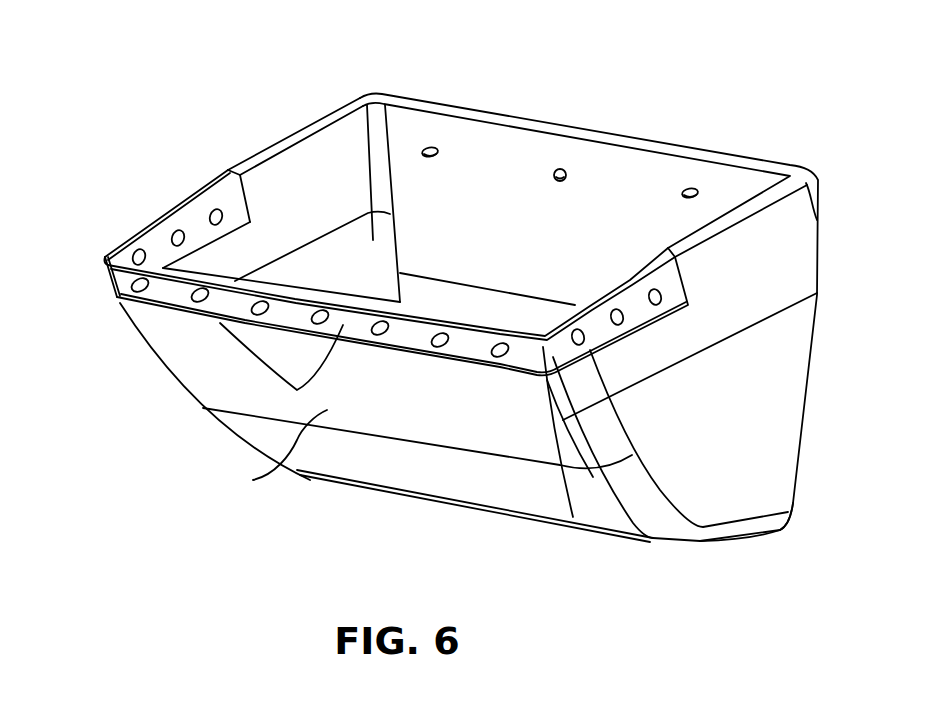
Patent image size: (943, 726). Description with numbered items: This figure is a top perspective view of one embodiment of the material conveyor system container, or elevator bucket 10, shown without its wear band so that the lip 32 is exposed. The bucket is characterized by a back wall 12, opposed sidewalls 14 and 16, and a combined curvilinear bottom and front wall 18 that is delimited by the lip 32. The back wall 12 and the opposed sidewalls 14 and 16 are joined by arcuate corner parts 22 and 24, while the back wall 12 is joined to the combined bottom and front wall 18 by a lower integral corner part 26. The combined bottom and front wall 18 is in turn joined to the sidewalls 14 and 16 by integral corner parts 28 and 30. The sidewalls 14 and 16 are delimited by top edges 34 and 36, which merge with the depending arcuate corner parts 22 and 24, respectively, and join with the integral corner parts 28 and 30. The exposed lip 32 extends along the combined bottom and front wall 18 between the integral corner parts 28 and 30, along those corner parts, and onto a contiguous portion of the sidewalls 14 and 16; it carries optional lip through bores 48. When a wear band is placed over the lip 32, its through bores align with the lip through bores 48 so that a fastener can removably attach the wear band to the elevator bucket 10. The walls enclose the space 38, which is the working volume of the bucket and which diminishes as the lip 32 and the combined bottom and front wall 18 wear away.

The elevator bucket 10 is at (236, 126).
The back wall 12 is at (667, 168).
The sidewall 14 is at (753, 390).
The sidewall 16 is at (347, 135).
The combined curvilinear bottom and front wall 18 is at (283, 467).
The arcuate corner part 22 is at (386, 104).
The arcuate corner part 24 is at (792, 172).
The lower integral corner part 26 is at (793, 518).
The integral corner part 28 is at (123, 280).
The integral corner part 30 is at (573, 518).
The lip 32 is at (225, 408).
The top edge 34 is at (817, 217).
The top edge 36 is at (266, 150).
The space 38 is at (511, 157).
The lip through bores 48 is at (213, 213).